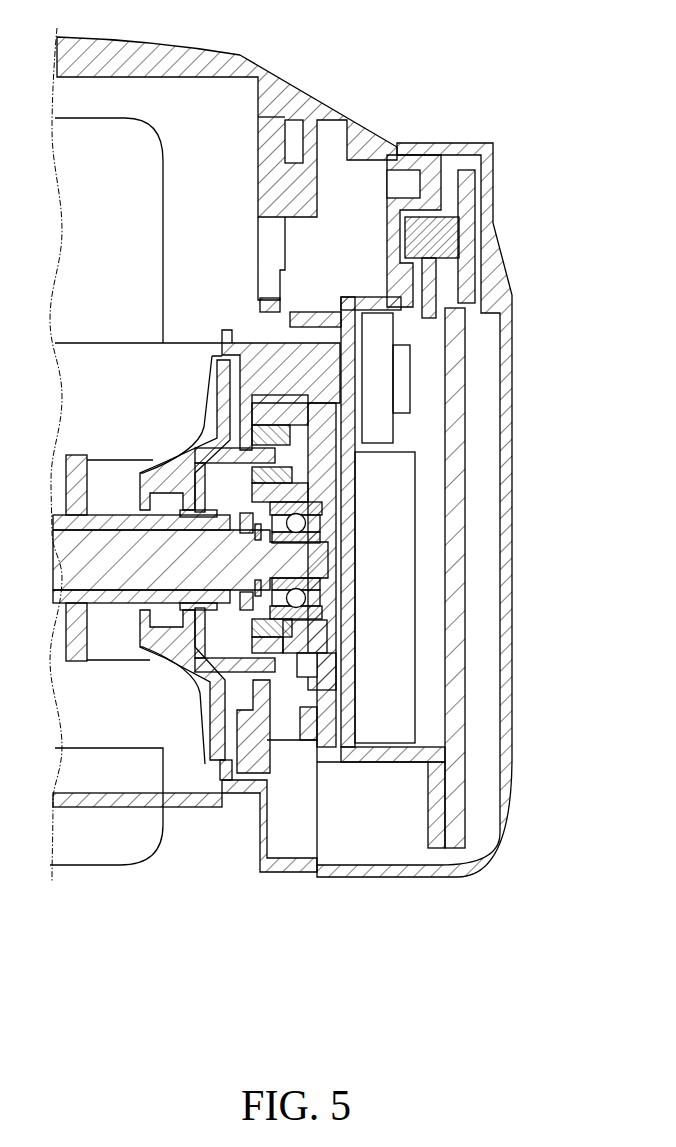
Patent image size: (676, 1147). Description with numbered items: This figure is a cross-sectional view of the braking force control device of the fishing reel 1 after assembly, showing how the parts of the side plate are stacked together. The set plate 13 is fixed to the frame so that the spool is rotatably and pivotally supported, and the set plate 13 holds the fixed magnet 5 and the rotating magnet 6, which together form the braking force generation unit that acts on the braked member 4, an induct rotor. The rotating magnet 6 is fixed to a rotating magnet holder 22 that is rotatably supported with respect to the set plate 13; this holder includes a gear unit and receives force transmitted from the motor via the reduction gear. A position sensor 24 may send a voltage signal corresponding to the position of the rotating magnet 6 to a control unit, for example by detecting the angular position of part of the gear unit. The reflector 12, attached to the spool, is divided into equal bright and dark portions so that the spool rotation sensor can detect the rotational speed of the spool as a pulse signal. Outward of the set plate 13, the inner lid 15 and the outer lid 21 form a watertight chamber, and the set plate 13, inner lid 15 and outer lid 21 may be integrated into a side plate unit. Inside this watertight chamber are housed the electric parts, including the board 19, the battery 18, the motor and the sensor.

The fishing reel 1 is at (484, 80).
The braked member 4 is at (222, 727).
The fixed magnet 5 is at (268, 692).
The rotating magnet 6 is at (298, 692).
The reflector 12 is at (204, 726).
The set plate 13 is at (192, 675).
The inner lid 15 is at (421, 160).
The battery 18 is at (377, 557).
The board 19 is at (453, 592).
The outer lid 21 is at (492, 258).
The rotating magnet holder 22 is at (313, 755).
The position sensor 24 is at (378, 380).